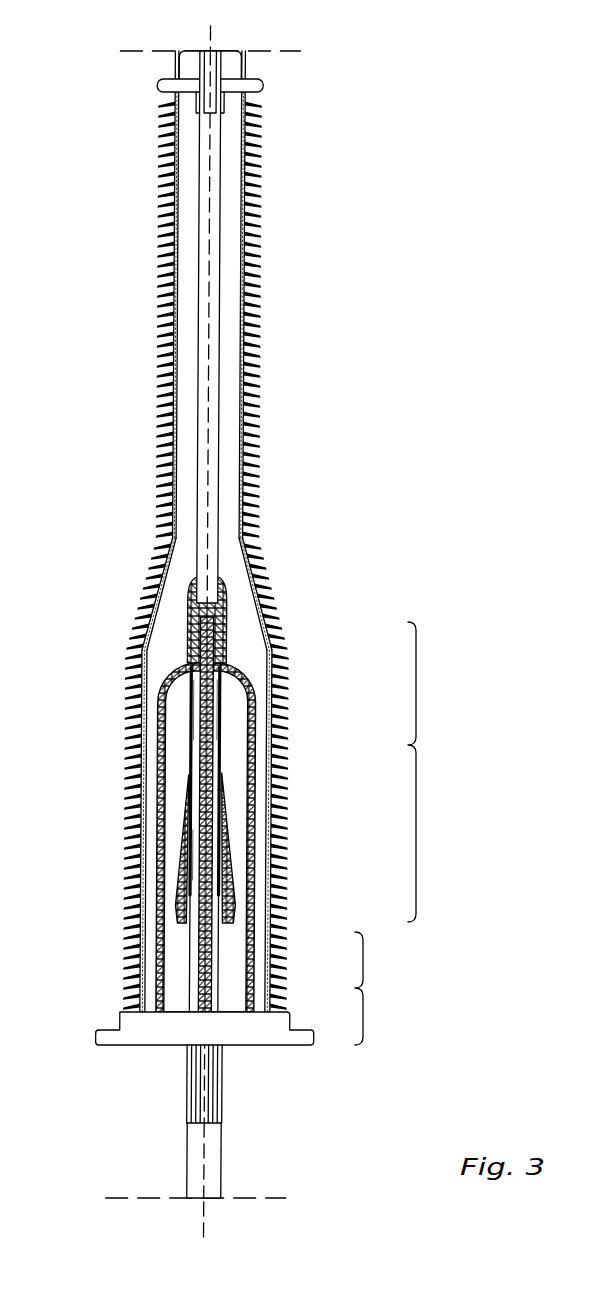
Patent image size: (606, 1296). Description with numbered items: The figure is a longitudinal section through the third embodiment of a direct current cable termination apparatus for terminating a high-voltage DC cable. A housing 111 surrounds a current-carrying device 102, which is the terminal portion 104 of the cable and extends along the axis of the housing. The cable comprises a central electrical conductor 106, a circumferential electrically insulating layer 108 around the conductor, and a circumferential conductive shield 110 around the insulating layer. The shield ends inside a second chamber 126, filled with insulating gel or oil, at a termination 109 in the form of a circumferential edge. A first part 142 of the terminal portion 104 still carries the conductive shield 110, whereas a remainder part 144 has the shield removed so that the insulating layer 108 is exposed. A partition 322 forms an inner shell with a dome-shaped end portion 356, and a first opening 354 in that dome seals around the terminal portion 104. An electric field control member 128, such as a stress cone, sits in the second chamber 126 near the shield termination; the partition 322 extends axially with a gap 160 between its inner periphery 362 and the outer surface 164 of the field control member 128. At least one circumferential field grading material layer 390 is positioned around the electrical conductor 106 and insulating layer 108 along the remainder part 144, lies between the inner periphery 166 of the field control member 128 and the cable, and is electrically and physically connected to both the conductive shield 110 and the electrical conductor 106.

The housing 111 is at (116, 384).
The current-carrying device 102 is at (224, 560).
The terminal portion 104 is at (179, 718).
The central electrical conductor 106 is at (273, 637).
The circumferential electrically insulating layer 108 is at (216, 730).
The termination 109 is at (172, 934).
The circumferential conductive shield 110 is at (192, 975).
The second chamber 126 is at (230, 1000).
The electric field control member 128 is at (243, 854).
The first part 142 is at (392, 988).
The remainder part 144 is at (438, 772).
The gap 160 is at (172, 847).
The outer surface 164 is at (221, 895).
The inner periphery 166 is at (190, 867).
The partition 322 is at (197, 743).
The first opening 354 is at (182, 665).
The dome-shaped end portion 356 is at (150, 675).
The inner periphery 362 is at (160, 998).
The circumferential field grading material layer 390 is at (188, 760).